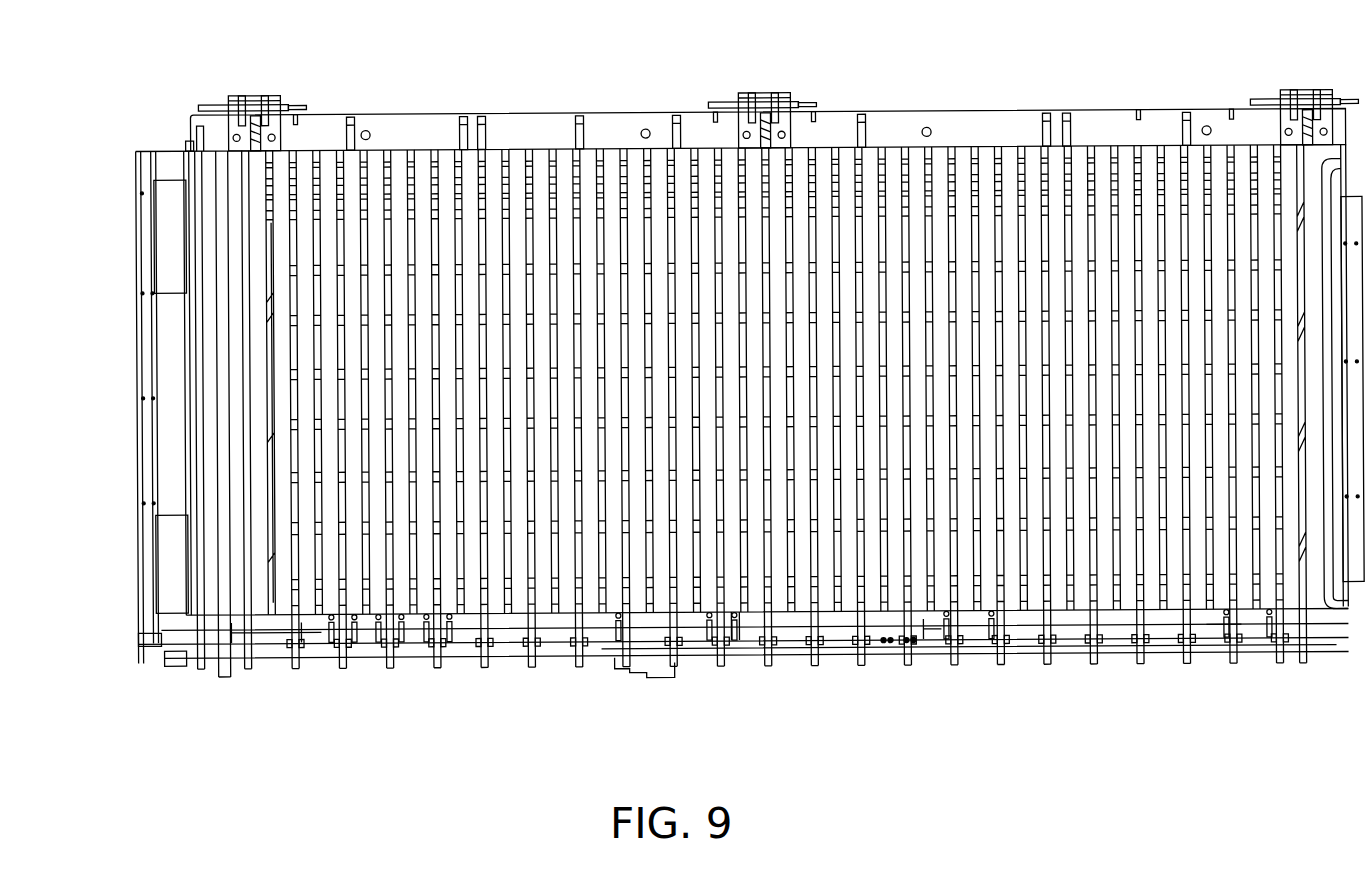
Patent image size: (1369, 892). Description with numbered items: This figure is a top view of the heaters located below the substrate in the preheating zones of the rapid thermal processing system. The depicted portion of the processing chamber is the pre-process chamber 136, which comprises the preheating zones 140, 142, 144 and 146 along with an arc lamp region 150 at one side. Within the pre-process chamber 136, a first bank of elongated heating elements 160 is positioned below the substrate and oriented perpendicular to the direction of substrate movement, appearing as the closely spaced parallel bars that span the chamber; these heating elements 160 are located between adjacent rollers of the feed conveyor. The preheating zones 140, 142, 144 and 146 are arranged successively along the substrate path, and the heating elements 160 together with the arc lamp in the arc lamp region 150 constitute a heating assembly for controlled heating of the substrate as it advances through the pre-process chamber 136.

The pre-process chamber 136 is at (743, 700).
The preheating zone 140 is at (1248, 664).
The preheating zone 142 is at (959, 665).
The preheating zone 144 is at (688, 666).
The preheating zone 146 is at (351, 668).
The arc lamp region 150 is at (165, 350).
The elongated heating elements 160 is at (425, 158).